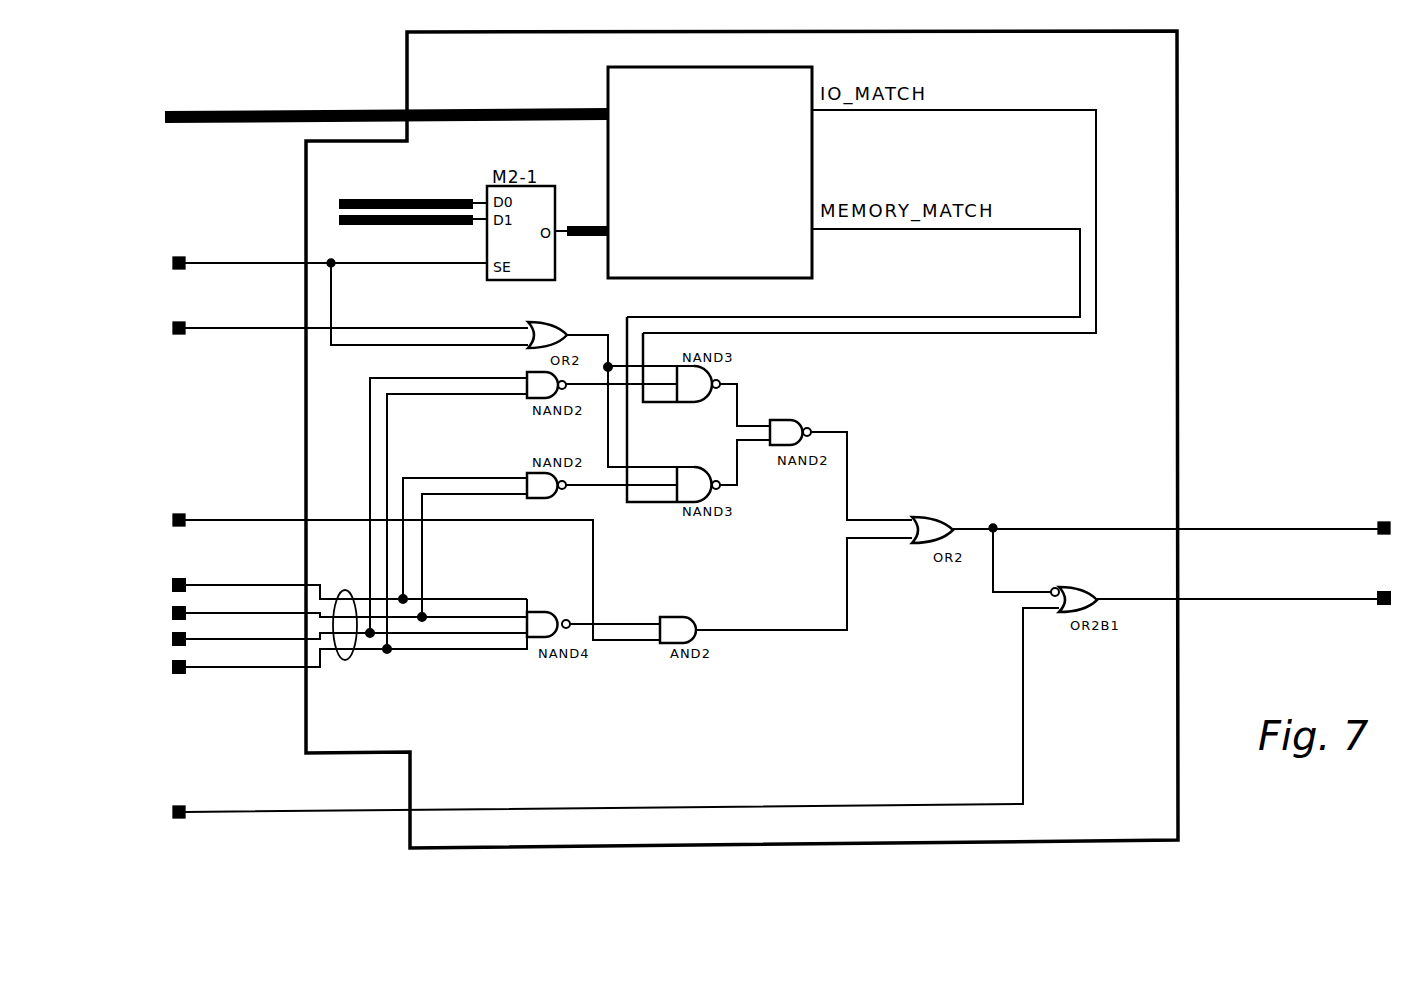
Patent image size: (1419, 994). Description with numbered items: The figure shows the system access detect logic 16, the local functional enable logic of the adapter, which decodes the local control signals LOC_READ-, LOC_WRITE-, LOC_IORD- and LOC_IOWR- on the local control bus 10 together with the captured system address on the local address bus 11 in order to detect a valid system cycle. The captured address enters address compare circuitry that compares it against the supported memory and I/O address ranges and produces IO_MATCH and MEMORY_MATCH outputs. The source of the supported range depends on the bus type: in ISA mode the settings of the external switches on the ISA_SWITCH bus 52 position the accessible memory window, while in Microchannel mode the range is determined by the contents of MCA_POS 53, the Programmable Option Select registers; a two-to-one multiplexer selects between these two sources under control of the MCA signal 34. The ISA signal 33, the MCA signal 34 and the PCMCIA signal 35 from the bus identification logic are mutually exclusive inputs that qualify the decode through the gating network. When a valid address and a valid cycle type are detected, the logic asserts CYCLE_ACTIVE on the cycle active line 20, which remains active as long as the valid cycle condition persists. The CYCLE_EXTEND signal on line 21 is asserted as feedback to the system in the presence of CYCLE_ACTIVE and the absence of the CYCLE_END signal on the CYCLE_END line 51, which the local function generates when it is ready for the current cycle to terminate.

The local control bus 10 is at (356, 656).
The local address bus 11 is at (236, 124).
The system access detect logic 16 is at (1178, 247).
The cycle active line 20 is at (1275, 531).
The CYCLE_EXTEND line 21 is at (1275, 602).
The ISA signal 33 is at (236, 333).
The MCA signal 34 is at (236, 268).
The PCMCIA signal 35 is at (236, 525).
The CYCLE_END line 51 is at (236, 816).
The ISA_SWITCH bus 52 is at (461, 198).
The MCA_POS 53 is at (430, 227).